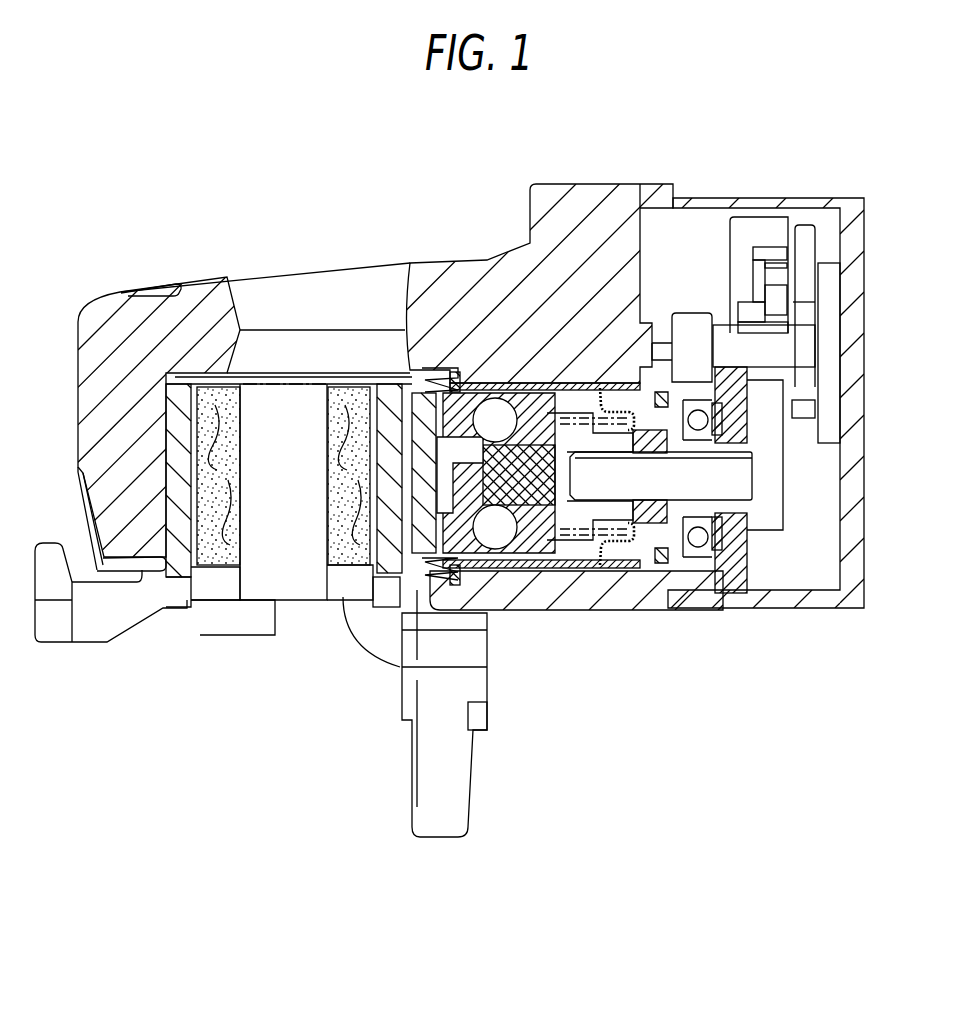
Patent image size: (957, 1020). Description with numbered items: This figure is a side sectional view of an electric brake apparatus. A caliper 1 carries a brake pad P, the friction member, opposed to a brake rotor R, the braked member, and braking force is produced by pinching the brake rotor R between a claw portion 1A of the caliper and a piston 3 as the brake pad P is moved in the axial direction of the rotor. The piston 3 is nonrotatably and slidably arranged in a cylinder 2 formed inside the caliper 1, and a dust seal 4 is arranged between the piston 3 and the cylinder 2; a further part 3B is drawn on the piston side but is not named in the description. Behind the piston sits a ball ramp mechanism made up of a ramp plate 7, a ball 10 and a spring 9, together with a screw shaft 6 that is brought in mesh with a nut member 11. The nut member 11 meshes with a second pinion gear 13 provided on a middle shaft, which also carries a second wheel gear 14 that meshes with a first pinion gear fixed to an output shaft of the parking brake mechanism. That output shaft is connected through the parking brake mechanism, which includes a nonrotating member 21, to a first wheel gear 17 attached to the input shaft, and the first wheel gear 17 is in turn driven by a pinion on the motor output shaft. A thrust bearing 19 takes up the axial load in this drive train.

The caliper 1 is at (462, 302).
The claw portion 1A is at (107, 503).
The cylinder 2 is at (555, 395).
The piston 3 is at (512, 571).
The bracket flange plate 3B is at (550, 567).
The dust seal 4 is at (412, 372).
The screw shaft 6 is at (737, 481).
The ramp plate 7 is at (420, 567).
The spring 9 is at (586, 400).
The ball 10 is at (495, 418).
The nut member 11 is at (703, 537).
The second pinion gear 13 is at (692, 340).
The second wheel gear 14 is at (825, 412).
The first wheel gear 17 is at (807, 245).
The thrust bearing 19 is at (720, 550).
The nonrotating member 21 is at (760, 232).
The brake pad P is at (207, 437).
The brake rotor R is at (295, 577).